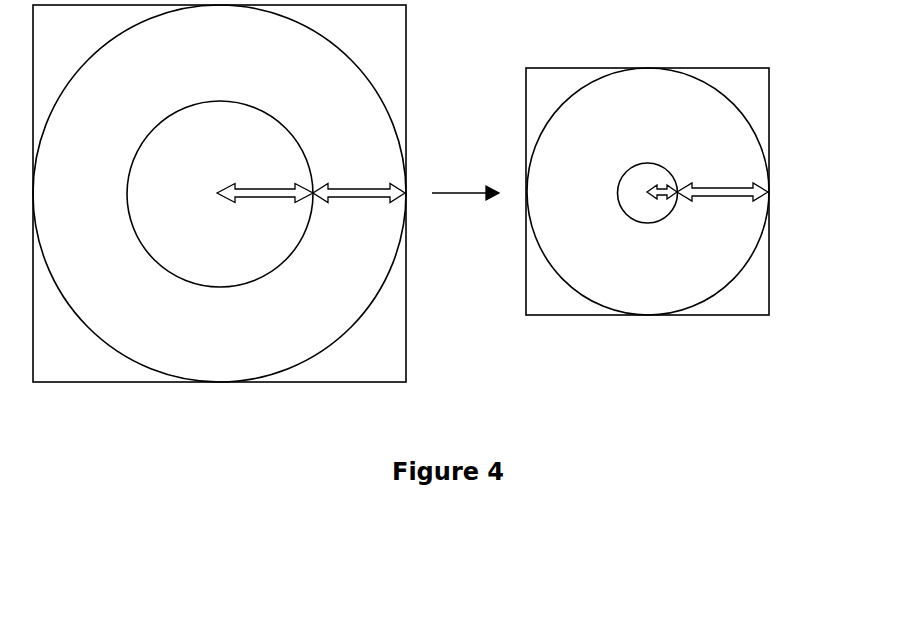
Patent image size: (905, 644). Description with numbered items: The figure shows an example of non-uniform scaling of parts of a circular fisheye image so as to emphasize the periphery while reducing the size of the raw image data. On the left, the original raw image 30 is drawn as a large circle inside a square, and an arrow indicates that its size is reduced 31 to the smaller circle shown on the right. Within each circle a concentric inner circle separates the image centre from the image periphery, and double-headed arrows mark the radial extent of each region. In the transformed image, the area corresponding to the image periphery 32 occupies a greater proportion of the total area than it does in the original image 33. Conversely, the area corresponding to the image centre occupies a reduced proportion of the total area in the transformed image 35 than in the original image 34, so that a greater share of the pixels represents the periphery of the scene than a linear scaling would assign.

The original raw image 30 is at (389, 383).
The reduced image 31 is at (753, 316).
The image periphery area in transformed image 32 is at (231, 336).
The image periphery area in original image 33 is at (659, 287).
The image centre area in original image 34 is at (229, 251).
The image centre area in transformed image 35 is at (638, 183).